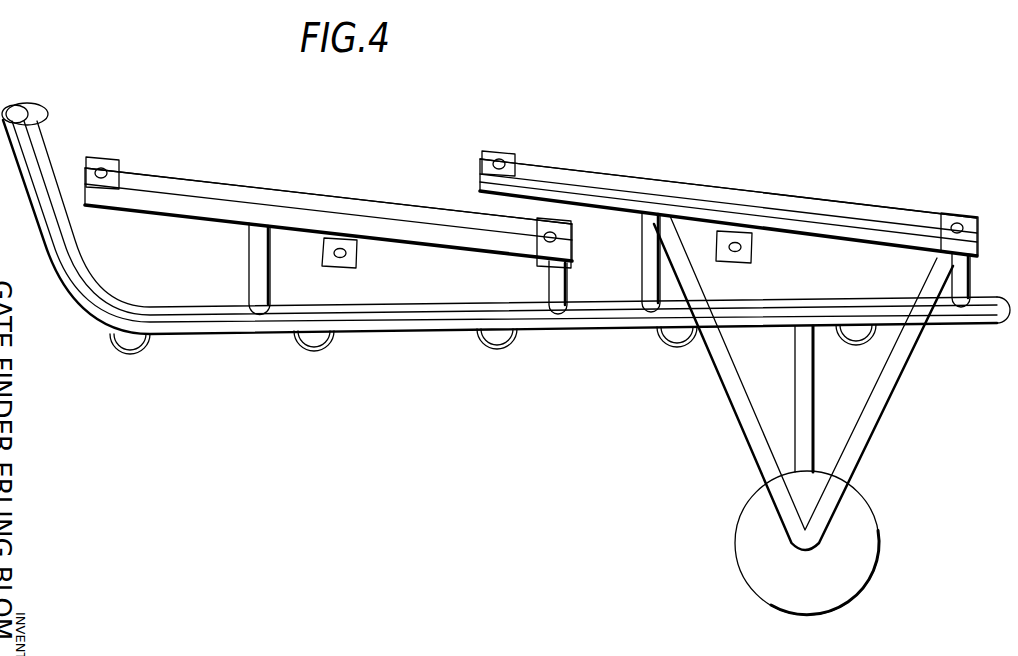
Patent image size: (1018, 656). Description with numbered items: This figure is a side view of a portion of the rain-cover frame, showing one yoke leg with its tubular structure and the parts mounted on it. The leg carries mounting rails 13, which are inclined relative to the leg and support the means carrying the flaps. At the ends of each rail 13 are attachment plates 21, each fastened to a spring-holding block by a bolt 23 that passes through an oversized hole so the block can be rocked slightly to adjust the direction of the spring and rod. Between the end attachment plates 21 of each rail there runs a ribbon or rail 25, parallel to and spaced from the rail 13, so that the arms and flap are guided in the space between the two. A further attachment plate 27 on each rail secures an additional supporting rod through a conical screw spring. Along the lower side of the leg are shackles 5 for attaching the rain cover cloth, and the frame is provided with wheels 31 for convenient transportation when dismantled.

The shackles 5 is at (145, 350).
The mounting rails 13 is at (372, 232).
The attachment plate 21 is at (108, 160).
The bolt 23 is at (106, 171).
The ribbon or rail 25 is at (276, 197).
The attachment plate 27 is at (357, 265).
The wheels 31 is at (752, 538).